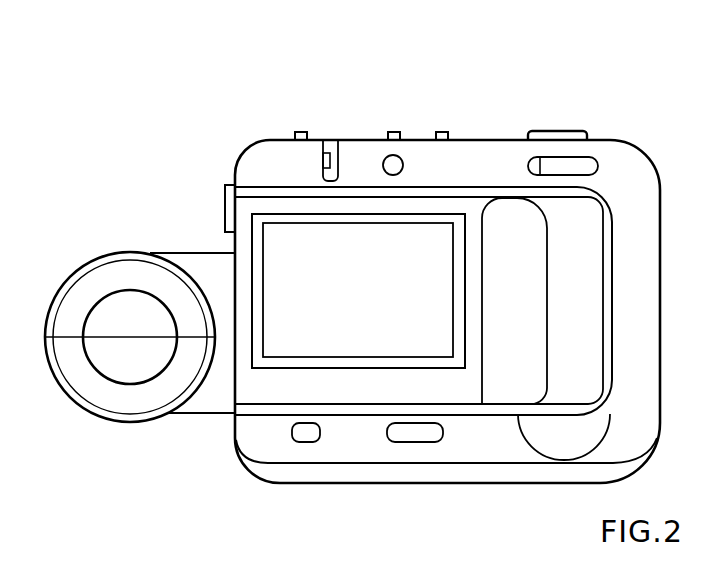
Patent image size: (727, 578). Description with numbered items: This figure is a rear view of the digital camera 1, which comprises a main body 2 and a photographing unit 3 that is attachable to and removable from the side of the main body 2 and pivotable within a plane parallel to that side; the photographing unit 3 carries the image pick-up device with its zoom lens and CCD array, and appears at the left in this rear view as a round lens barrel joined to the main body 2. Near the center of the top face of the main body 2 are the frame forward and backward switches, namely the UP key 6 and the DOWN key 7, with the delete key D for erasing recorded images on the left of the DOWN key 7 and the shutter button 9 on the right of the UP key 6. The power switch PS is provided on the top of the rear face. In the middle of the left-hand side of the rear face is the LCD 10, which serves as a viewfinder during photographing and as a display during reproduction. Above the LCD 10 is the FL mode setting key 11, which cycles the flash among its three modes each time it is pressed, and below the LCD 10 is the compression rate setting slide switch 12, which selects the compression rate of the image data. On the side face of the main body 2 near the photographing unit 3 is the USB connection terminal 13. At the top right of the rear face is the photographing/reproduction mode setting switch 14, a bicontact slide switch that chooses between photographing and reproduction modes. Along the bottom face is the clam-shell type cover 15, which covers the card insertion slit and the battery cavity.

The digital camera 1 is at (341, 108).
The main body 2 is at (515, 140).
The photographing unit 3 is at (101, 257).
The UP key 6 is at (442, 132).
The DOWN key 7 is at (395, 132).
The shutter button 9 is at (560, 131).
The delete key D is at (297, 132).
The power switch PS is at (386, 158).
The LCD 10 is at (358, 291).
The FL mode setting key 11 is at (326, 162).
The compression rate setting slide switch 12 is at (292, 433).
The USB connection terminal 13 is at (225, 222).
The photographing/reproduction mode setting switch 14 is at (538, 165).
The clam-shell type cover 15 is at (467, 482).